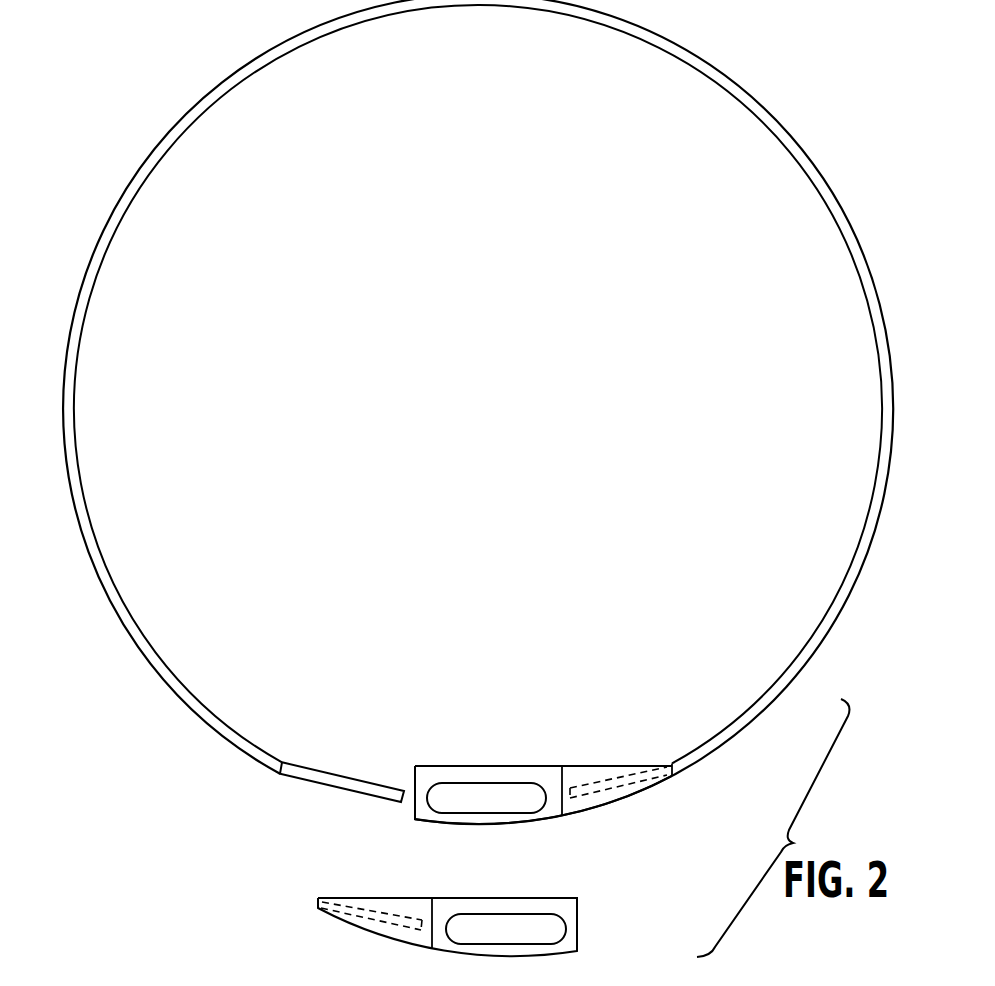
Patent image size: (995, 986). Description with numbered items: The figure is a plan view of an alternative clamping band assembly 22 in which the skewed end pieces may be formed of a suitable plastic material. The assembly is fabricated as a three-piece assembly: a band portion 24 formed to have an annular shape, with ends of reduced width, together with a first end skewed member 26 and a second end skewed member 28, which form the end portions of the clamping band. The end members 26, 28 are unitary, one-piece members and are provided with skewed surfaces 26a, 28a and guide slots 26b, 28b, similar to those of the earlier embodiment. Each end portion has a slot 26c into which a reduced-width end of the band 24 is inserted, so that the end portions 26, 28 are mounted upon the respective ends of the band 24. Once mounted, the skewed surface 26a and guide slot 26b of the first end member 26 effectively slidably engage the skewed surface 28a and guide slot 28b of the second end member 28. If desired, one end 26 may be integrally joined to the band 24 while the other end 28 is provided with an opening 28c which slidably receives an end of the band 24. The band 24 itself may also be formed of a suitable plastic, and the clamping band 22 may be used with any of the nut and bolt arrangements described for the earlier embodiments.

The clamping band assembly 22 is at (214, 854).
The band portion 24 is at (128, 675).
The first end skewed member 26 is at (548, 778).
The skewed surface 26a is at (472, 773).
The guide slot 26b is at (518, 792).
The slot 26c is at (597, 782).
The second end skewed member 28 is at (467, 895).
The skewed surface 28a is at (527, 897).
The guide slot 28b is at (550, 932).
The opening 28c is at (393, 903).